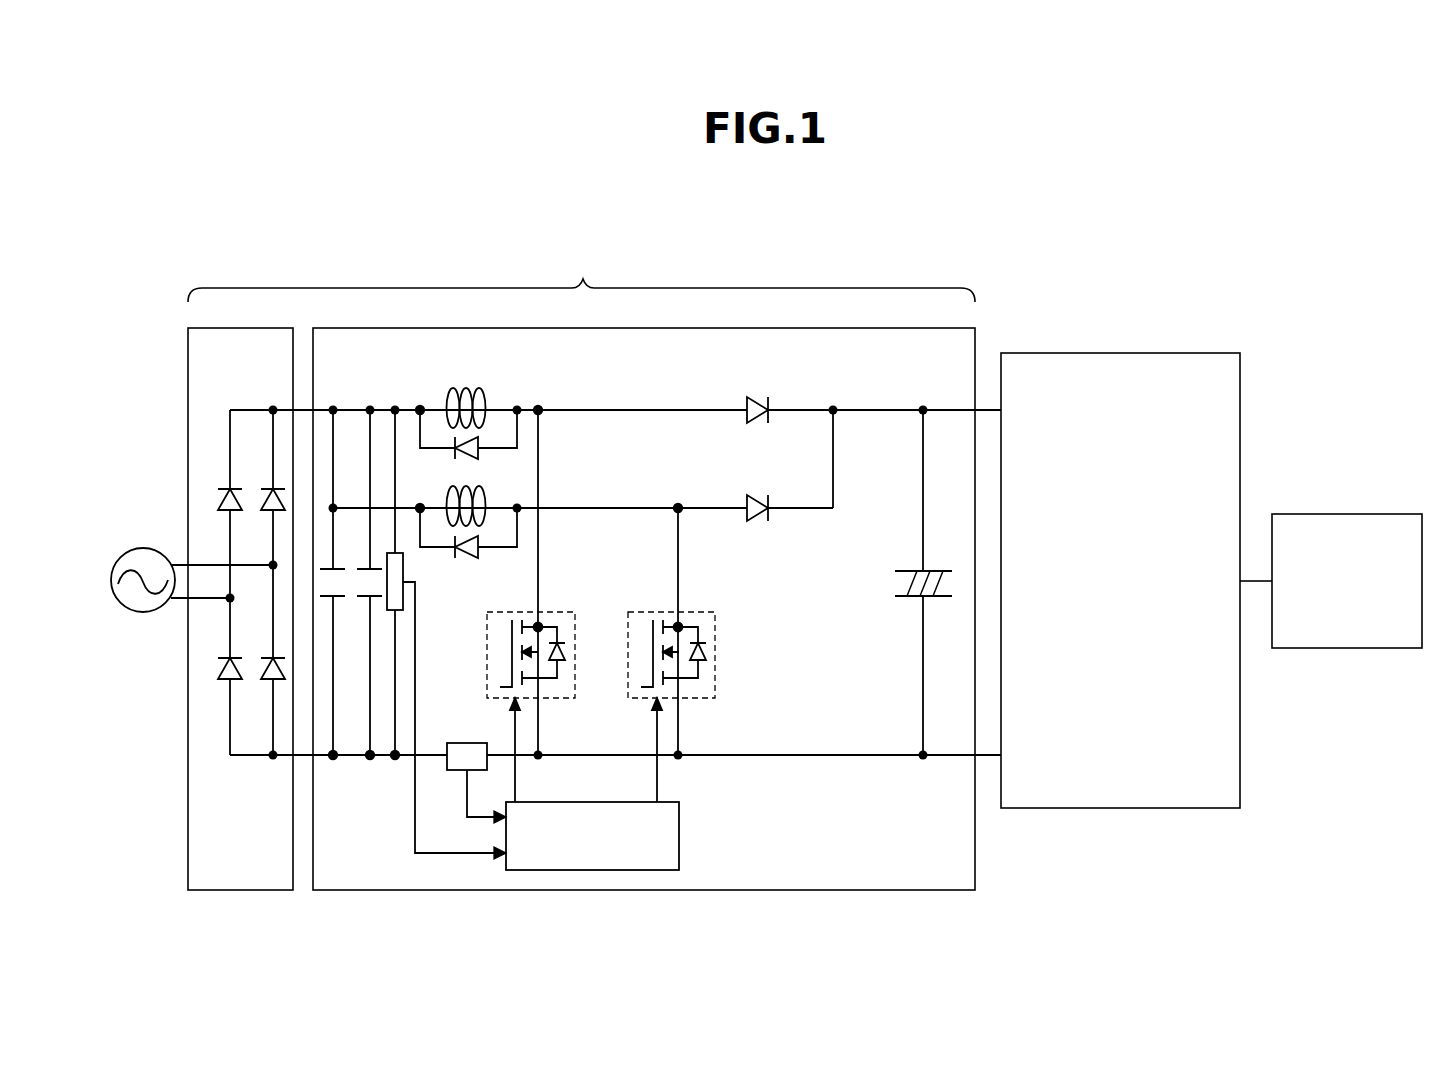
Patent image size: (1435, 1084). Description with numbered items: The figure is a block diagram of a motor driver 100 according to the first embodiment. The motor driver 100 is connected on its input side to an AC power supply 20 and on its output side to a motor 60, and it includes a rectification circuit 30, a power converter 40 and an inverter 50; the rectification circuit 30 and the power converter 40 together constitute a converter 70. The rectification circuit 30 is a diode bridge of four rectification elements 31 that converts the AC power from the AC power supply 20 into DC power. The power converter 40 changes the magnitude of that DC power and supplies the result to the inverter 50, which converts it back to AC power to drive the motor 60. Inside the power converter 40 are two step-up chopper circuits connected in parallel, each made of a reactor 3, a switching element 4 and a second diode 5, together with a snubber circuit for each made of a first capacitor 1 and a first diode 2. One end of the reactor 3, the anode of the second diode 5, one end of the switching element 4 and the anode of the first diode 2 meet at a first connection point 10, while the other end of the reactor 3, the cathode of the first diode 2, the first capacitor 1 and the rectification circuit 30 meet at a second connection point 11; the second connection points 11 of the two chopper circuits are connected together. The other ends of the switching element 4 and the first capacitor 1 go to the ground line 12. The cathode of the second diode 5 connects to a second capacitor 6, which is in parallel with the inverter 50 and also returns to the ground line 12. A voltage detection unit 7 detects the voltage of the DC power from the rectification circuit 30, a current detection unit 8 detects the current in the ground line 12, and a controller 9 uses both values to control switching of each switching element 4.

The motor driver 100 is at (837, 221).
The converter 70 is at (581, 275).
The rectification circuit 30 is at (238, 328).
The power converter 40 is at (918, 328).
The inverter 50 is at (1180, 353).
The motor 60 is at (1362, 514).
The AC power supply 20 is at (140, 548).
The rectification element 31 is at (226, 486).
The first capacitor 1 is at (339, 567).
The second connection point 11 is at (418, 408).
The reactor 3 is at (470, 389).
The first diode 2 is at (480, 453).
The first connection point 10 is at (540, 408).
The second diode 5 is at (746, 400).
The voltage detection unit 7 is at (405, 562).
The switching element 4 is at (563, 612).
The current detection unit 8 is at (460, 742).
The ground line 12 is at (349, 758).
The second capacitor 6 is at (926, 598).
The controller 9 is at (681, 836).